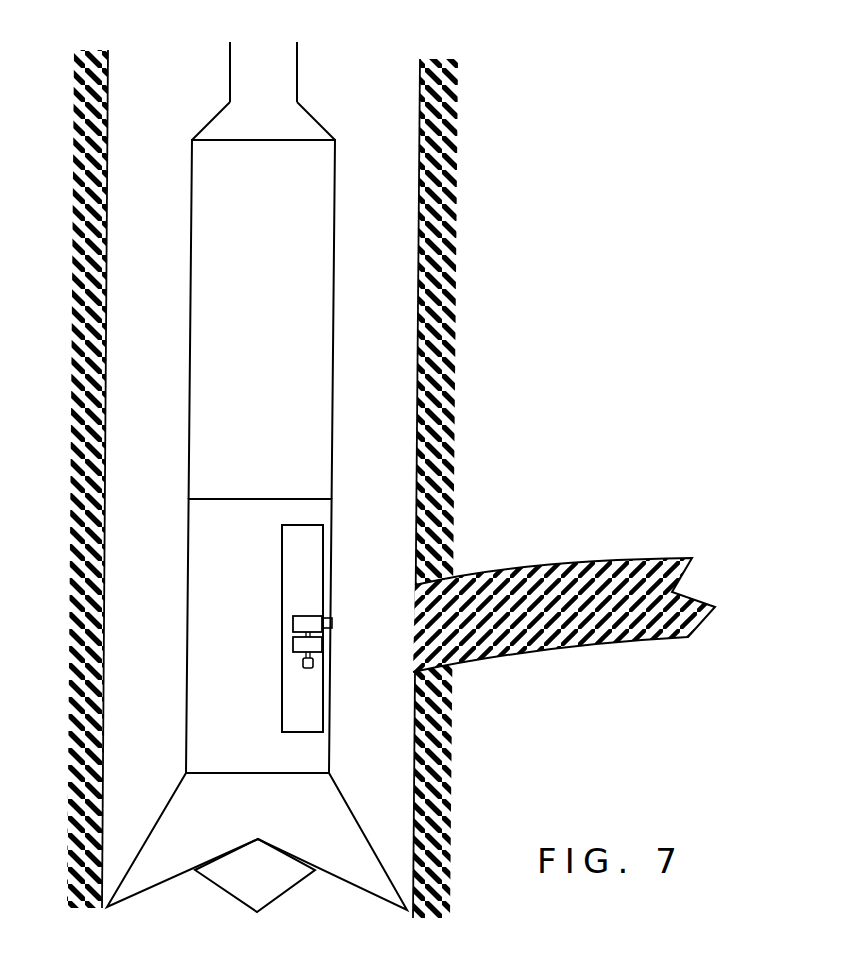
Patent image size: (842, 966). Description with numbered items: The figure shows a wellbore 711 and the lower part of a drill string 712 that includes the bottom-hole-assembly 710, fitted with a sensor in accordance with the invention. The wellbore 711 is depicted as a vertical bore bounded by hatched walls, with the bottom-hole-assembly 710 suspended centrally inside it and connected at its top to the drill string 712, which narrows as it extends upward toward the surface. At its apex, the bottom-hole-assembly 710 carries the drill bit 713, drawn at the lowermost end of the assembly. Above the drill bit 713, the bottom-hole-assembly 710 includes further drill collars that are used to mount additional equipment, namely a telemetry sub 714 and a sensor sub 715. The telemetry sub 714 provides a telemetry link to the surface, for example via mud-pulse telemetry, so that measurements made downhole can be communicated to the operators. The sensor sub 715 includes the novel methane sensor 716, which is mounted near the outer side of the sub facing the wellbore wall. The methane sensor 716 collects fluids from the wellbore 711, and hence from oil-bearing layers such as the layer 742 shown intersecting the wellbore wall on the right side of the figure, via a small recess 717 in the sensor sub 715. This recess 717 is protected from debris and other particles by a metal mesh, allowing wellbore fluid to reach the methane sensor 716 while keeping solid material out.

The bottom-hole-assembly 710 is at (172, 114).
The wellbore 711 is at (165, 418).
The drill string 712 is at (297, 72).
The drill bit 713 is at (282, 826).
The telemetry sub 714 is at (290, 300).
The sensor sub 715 is at (258, 692).
The methane sensor 716 is at (292, 627).
The recess 717 is at (324, 625).
The layer 742 is at (547, 567).